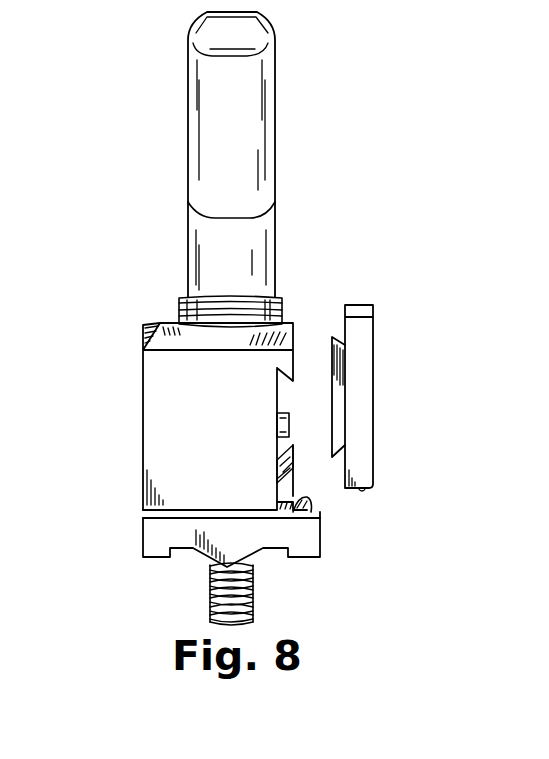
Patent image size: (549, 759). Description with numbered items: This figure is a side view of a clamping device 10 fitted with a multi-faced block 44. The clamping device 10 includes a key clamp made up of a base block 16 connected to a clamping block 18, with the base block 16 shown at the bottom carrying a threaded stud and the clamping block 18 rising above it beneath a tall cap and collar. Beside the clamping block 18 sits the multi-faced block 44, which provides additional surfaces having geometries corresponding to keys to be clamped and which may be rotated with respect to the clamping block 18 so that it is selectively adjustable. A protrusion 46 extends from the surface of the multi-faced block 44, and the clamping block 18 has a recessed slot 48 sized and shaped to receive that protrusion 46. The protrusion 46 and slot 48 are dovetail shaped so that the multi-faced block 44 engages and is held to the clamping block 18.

The clamping device 10 is at (110, 313).
The base block 16 is at (170, 537).
The clamping block 18 is at (180, 428).
The multi-faced block 44 is at (362, 380).
The protrusion 46 is at (325, 363).
The recessed slot 48 is at (288, 402).